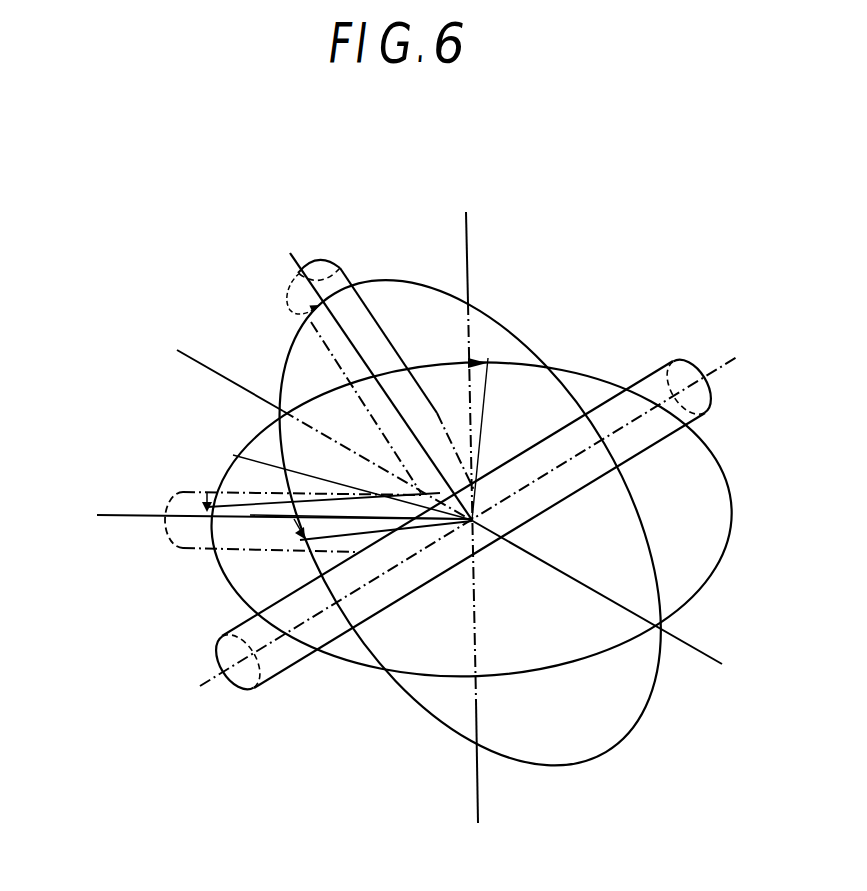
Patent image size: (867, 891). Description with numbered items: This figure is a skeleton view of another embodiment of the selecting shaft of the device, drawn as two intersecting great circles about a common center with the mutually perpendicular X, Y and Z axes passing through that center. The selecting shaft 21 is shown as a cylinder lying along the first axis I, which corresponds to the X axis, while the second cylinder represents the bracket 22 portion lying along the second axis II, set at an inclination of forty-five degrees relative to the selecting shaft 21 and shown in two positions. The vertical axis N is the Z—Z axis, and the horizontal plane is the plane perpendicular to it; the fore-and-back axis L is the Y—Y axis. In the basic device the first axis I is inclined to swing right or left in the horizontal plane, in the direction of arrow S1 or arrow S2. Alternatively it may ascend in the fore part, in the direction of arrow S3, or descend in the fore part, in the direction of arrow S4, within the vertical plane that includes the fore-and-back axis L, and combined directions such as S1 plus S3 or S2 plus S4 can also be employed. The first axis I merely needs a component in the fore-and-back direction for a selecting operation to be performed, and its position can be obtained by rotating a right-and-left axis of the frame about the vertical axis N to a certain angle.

The selecting shaft 21 is at (640, 378).
The bracket 22 is at (340, 268).
The first axis I is at (707, 366).
The second axis II is at (100, 515).
The vertical axis N is at (468, 237).
The fore-and-back axis L is at (703, 648).
The arrow S1 is at (407, 367).
The arrow S2 is at (233, 455).
The arrow S3 is at (472, 520).
The arrow S4 is at (250, 515).